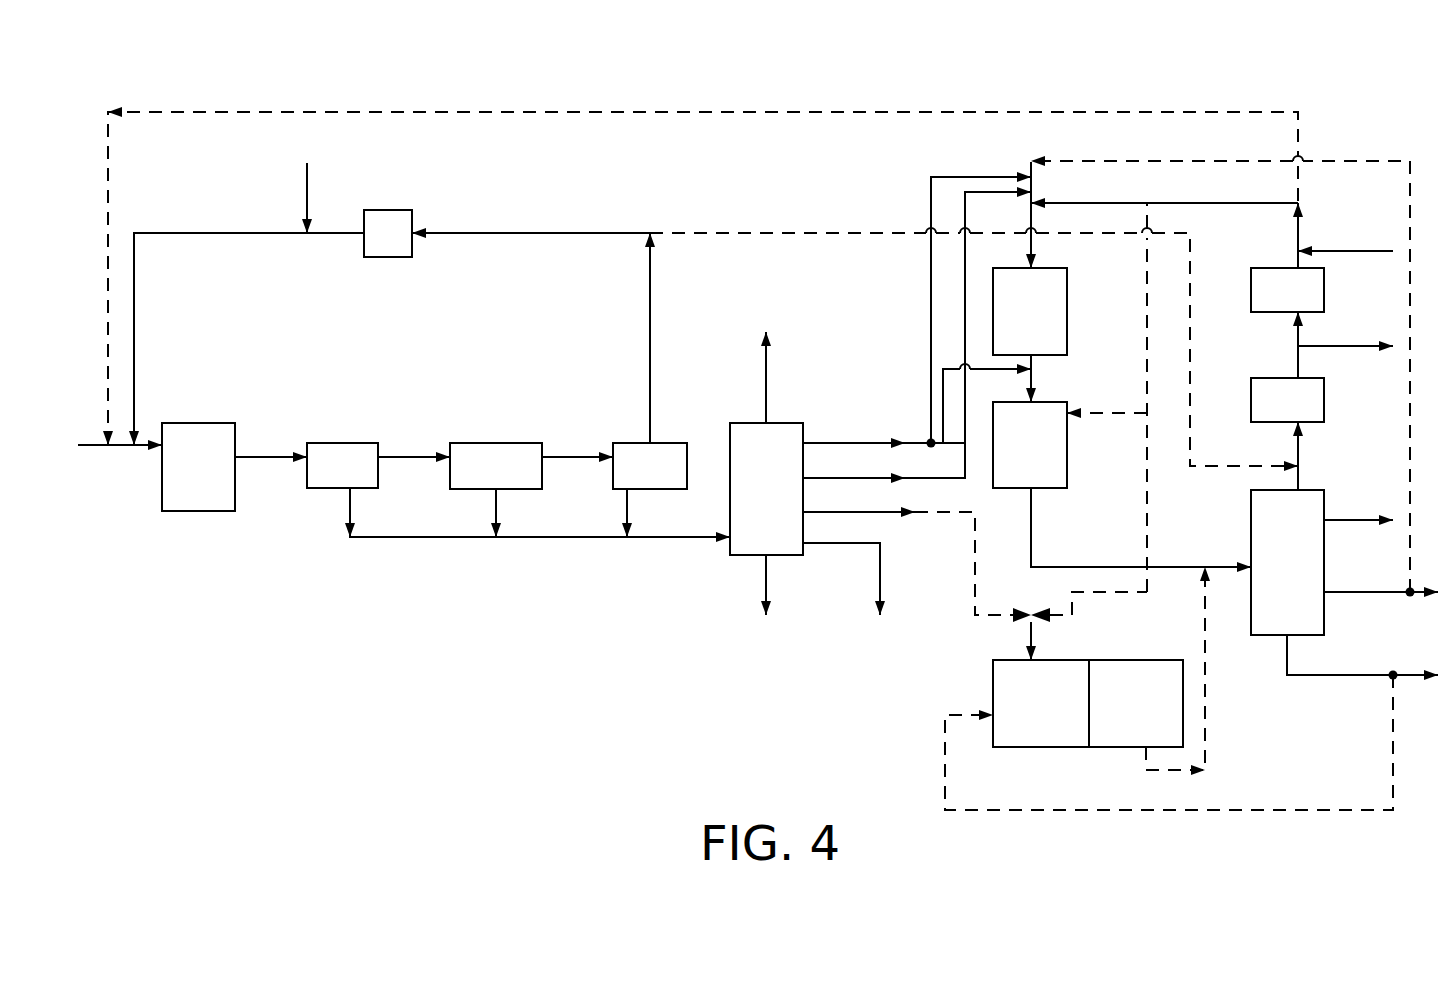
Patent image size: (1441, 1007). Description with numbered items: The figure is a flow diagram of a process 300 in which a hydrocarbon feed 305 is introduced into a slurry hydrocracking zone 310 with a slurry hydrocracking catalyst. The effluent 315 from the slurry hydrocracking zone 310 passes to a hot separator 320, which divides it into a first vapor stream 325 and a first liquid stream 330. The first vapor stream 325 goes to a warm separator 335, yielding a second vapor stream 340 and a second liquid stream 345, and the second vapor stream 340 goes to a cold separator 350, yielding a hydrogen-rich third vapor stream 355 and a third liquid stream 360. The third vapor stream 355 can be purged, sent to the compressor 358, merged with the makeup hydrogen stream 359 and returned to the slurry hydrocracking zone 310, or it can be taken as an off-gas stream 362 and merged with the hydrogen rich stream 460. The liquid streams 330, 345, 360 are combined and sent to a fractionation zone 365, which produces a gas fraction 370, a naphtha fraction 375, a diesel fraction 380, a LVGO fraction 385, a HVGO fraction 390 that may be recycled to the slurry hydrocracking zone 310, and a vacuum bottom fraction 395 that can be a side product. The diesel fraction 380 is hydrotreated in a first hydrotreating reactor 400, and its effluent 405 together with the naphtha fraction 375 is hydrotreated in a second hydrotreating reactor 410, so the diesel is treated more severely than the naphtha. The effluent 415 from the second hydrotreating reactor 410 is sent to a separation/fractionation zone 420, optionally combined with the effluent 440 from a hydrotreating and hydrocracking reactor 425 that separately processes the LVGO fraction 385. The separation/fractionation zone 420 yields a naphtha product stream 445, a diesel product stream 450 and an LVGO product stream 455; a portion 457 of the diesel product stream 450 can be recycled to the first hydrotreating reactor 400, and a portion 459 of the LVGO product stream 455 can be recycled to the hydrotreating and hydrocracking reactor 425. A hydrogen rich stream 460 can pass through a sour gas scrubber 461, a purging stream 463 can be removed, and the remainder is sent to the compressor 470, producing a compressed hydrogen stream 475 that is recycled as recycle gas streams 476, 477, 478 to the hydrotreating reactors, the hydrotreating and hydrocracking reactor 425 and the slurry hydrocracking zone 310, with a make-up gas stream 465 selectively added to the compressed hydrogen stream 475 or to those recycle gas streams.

The process 300 is at (182, 84).
The hydrocarbon feed 305 is at (97, 447).
The slurry hydrocracking zone 310 is at (218, 423).
The effluent 315 is at (272, 458).
The hot separator 320 is at (362, 443).
The first vapor stream 325 is at (409, 458).
The first liquid stream 330 is at (350, 503).
The warm separator 335 is at (510, 443).
The second vapor stream 340 is at (577, 458).
The second liquid stream 345 is at (496, 503).
The cold separator 350 is at (623, 443).
The third vapor stream 355 is at (650, 312).
The compressor 358 is at (390, 210).
The makeup hydrogen stream 359 is at (307, 185).
The third liquid stream 360 is at (627, 503).
The off-gas stream 362 is at (754, 232).
The fractionation zone 365 is at (798, 420).
The gas fraction 370 is at (766, 383).
The naphtha fraction 375 is at (812, 443).
The diesel fraction 380 is at (812, 478).
The LVGO fraction 385 is at (812, 512).
The HVGO fraction 390 is at (812, 543).
The vacuum bottom fraction 395 is at (766, 575).
The first hydrotreating reactor 400 is at (1058, 268).
The effluent 405 is at (1033, 362).
The second hydrotreating reactor 410 is at (1067, 450).
The effluent 415 is at (1188, 567).
The separation/fractionation zone 420 is at (1251, 500).
The hydrotreating and hydrocracking reactor 425 is at (993, 680).
The effluent 440 is at (1205, 720).
The naphtha product stream 445 is at (1358, 520).
The diesel product stream 450 is at (1368, 592).
The LVGO product stream 455 is at (1357, 675).
The portion of the diesel product stream 457 is at (1378, 160).
The portion of the LVGO product stream 459 is at (1391, 750).
The hydrogen rich stream 460 is at (1300, 456).
The sour gas scrubber 461 is at (1312, 378).
The purging stream 463 is at (1320, 346).
The make-up gas stream 465 is at (1385, 251).
The compressor 470 is at (1324, 290).
The compressed hydrogen stream 475 is at (1300, 226).
The recycle gas stream 476 is at (1083, 203).
The recycle gas stream 477 is at (1147, 330).
The recycle gas stream 478 is at (1152, 112).